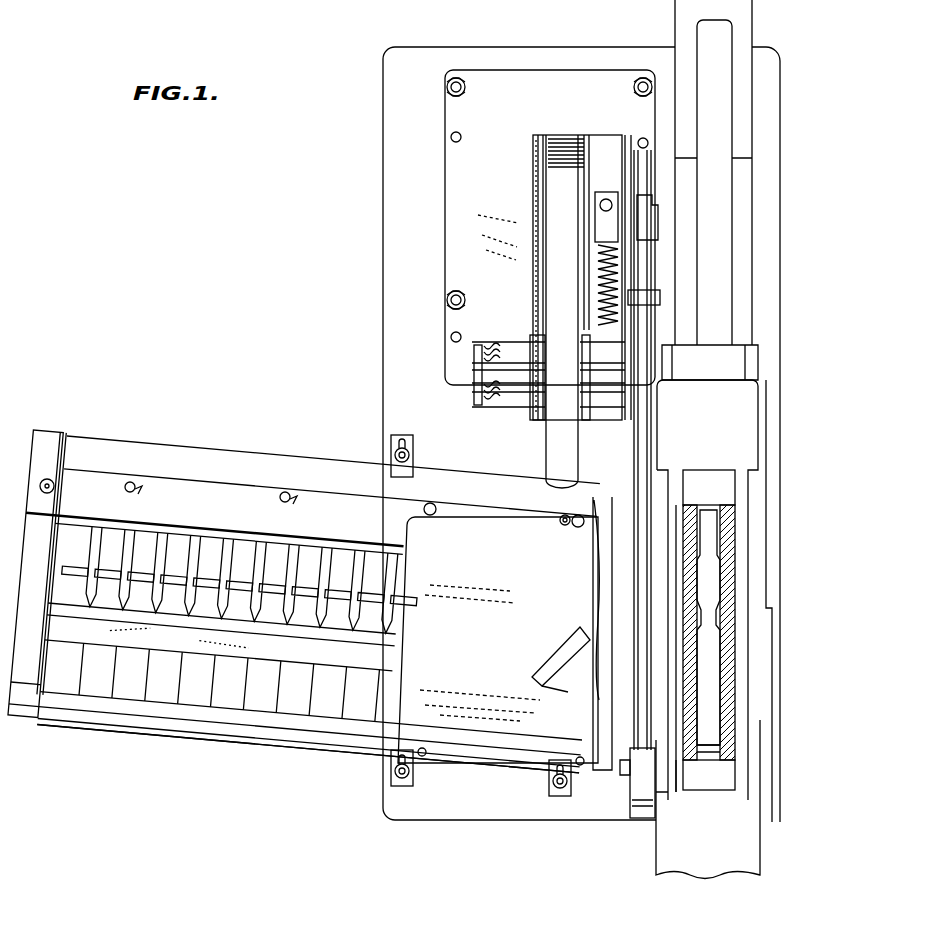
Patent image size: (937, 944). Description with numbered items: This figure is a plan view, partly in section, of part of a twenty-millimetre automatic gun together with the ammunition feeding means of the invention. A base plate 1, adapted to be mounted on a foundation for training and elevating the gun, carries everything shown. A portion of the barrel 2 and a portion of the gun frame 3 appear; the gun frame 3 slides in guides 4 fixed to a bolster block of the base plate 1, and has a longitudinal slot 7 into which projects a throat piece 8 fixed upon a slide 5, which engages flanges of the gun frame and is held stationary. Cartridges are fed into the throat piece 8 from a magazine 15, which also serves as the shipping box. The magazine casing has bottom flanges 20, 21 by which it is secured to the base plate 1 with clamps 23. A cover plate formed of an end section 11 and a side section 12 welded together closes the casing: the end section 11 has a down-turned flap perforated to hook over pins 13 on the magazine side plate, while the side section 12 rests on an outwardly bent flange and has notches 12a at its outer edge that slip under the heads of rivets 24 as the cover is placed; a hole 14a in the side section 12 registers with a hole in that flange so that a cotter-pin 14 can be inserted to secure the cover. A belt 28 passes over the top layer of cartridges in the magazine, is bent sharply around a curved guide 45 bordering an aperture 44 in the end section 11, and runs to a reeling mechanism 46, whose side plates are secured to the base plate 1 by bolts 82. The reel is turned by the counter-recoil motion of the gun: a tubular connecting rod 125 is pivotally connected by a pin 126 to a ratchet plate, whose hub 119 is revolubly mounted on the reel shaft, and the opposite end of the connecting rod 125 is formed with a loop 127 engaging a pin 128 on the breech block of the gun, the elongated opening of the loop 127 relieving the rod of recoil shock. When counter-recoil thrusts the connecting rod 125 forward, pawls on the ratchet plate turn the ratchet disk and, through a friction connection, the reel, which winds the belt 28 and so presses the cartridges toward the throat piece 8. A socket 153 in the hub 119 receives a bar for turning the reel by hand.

The base plate 1 is at (383, 256).
The barrel 2 is at (675, 22).
The gun frame 3 is at (672, 856).
The guides 4 is at (660, 692).
The slide 5 is at (678, 762).
The longitudinal slot 7 is at (720, 472).
The throat piece 8 is at (692, 475).
The end section 11 is at (398, 700).
The side section 12 is at (219, 580).
The notches 12a is at (140, 490).
The pins 13 is at (426, 755).
The cotter-pin 14 is at (66, 460).
The hole 14a is at (40, 482).
The magazine 15 is at (150, 715).
The bottom flange 20 is at (308, 460).
The bottom flange 21 is at (328, 745).
The clamps 23 is at (414, 464).
The rivets 24 is at (128, 482).
The belt 28 is at (558, 445).
The aperture 44 is at (565, 690).
The curved guide 45 is at (535, 670).
The reeling mechanism 46 is at (573, 140).
The bolts 82 is at (447, 90).
The hub 119 is at (613, 217).
The connecting rod 125 is at (640, 447).
The pin 126 is at (660, 212).
The loop 127 is at (638, 808).
The pin 128 is at (625, 790).
The socket 153 is at (612, 198).